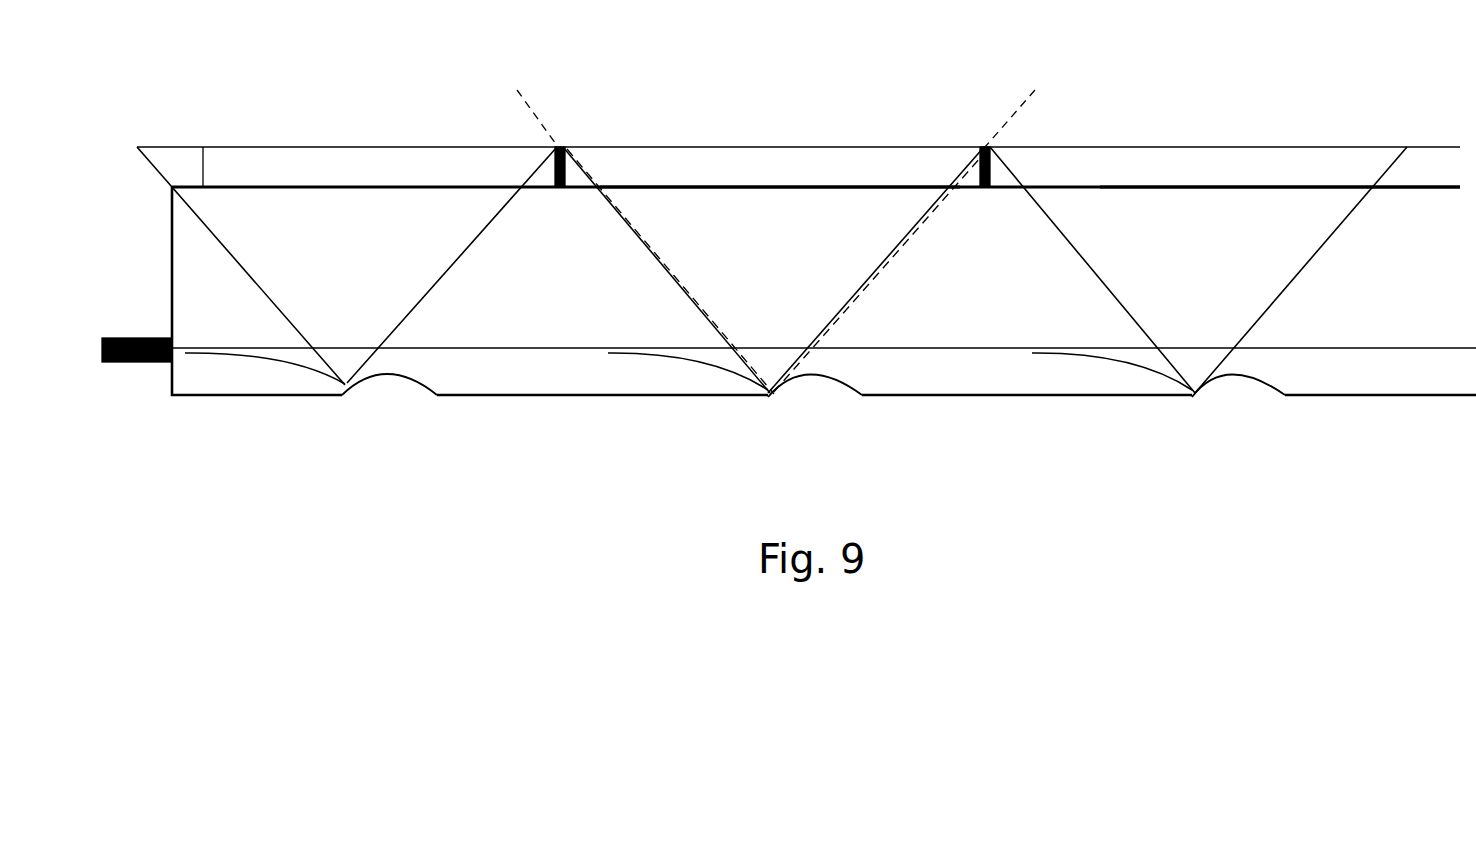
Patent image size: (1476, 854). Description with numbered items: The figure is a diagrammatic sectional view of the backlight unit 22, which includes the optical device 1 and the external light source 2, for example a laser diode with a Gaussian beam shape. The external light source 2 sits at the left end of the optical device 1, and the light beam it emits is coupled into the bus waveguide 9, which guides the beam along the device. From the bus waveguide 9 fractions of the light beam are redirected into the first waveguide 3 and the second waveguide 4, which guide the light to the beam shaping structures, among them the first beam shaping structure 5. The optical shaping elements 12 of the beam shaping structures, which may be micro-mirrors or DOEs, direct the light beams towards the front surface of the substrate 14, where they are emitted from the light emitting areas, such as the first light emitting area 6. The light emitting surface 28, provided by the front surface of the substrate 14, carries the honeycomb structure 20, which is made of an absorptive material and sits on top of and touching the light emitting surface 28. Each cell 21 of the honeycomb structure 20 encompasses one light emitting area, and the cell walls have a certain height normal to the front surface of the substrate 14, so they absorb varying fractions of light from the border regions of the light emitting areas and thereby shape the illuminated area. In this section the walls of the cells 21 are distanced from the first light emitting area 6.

The optical device 1 is at (497, 426).
The external light source 2 is at (135, 362).
The first waveguide 3 is at (1113, 360).
The second waveguide 4 is at (670, 358).
The first beam shaping structure 5 is at (1305, 177).
The first light emitting area 6 is at (774, 175).
The bus waveguide 9 is at (285, 352).
The optical shaping elements 12 is at (807, 375).
The substrate 14 is at (897, 310).
The honeycomb structure 20 is at (558, 147).
The cell 21 is at (563, 148).
The backlight unit 22 is at (146, 92).
The light emitting surface 28 is at (1223, 177).